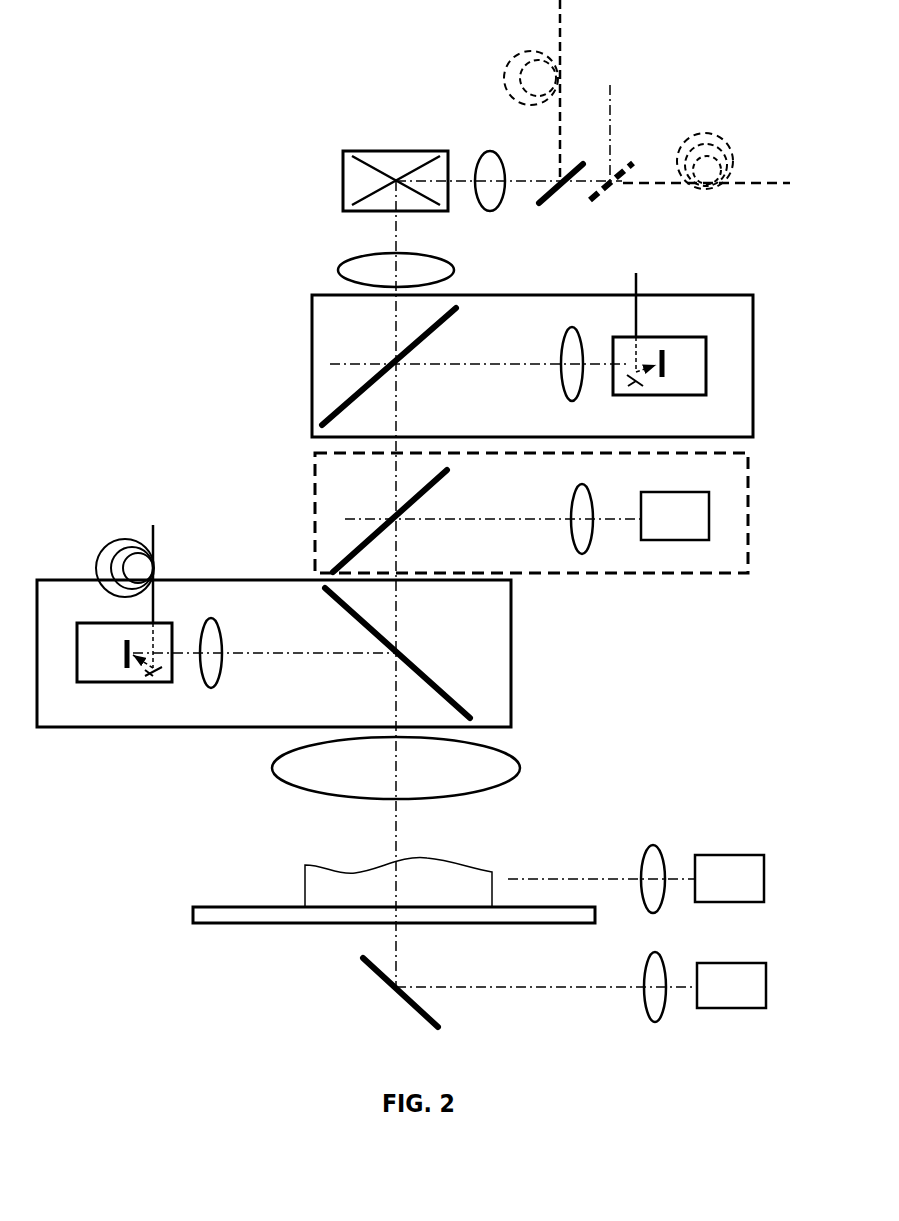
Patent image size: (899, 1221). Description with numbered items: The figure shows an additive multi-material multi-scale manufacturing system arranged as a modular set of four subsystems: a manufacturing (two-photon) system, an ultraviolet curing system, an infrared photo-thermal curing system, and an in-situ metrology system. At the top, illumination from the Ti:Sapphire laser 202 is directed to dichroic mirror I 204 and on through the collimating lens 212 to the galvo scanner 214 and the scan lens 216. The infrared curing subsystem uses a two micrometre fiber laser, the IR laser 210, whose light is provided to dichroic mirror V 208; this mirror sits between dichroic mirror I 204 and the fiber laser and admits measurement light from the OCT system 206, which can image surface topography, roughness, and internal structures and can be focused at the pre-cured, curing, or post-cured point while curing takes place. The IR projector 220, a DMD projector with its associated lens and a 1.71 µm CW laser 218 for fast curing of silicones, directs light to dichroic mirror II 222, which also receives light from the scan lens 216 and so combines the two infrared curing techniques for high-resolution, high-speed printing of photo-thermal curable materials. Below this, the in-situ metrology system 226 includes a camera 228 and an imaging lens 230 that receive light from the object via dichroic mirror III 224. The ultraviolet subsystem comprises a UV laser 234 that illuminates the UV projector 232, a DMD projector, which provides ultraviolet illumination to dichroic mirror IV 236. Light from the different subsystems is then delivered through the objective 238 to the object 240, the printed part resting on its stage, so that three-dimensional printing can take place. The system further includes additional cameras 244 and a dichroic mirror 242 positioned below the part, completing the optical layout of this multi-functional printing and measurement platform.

The Ti:Sapphire laser 202 is at (461, 90).
The dichroic mirror I 204 is at (552, 181).
The OCT system 206 is at (611, 122).
The dichroic mirror V 208 is at (639, 155).
The IR laser 210 is at (705, 184).
The collimating lens 212 is at (485, 152).
The galvo scanner 214 is at (305, 181).
The scan lens 216 is at (322, 267).
The 1.71 µm CW laser 218 is at (631, 296).
The IR projector 220 is at (532, 366).
The dichroic mirror II 222 is at (367, 378).
The dichroic mirror III 224 is at (348, 543).
The in-situ metrology system 226 is at (531, 513).
The camera 228 is at (676, 543).
The imaging lens 230 is at (586, 559).
The UV projector 232 is at (274, 653).
The UV laser 234 is at (106, 561).
The dichroic mirror IV 236 is at (460, 697).
The objective 238 is at (325, 768).
The object 240 is at (305, 864).
The dichroic mirror 242 is at (396, 992).
The camera 244 is at (703, 933).